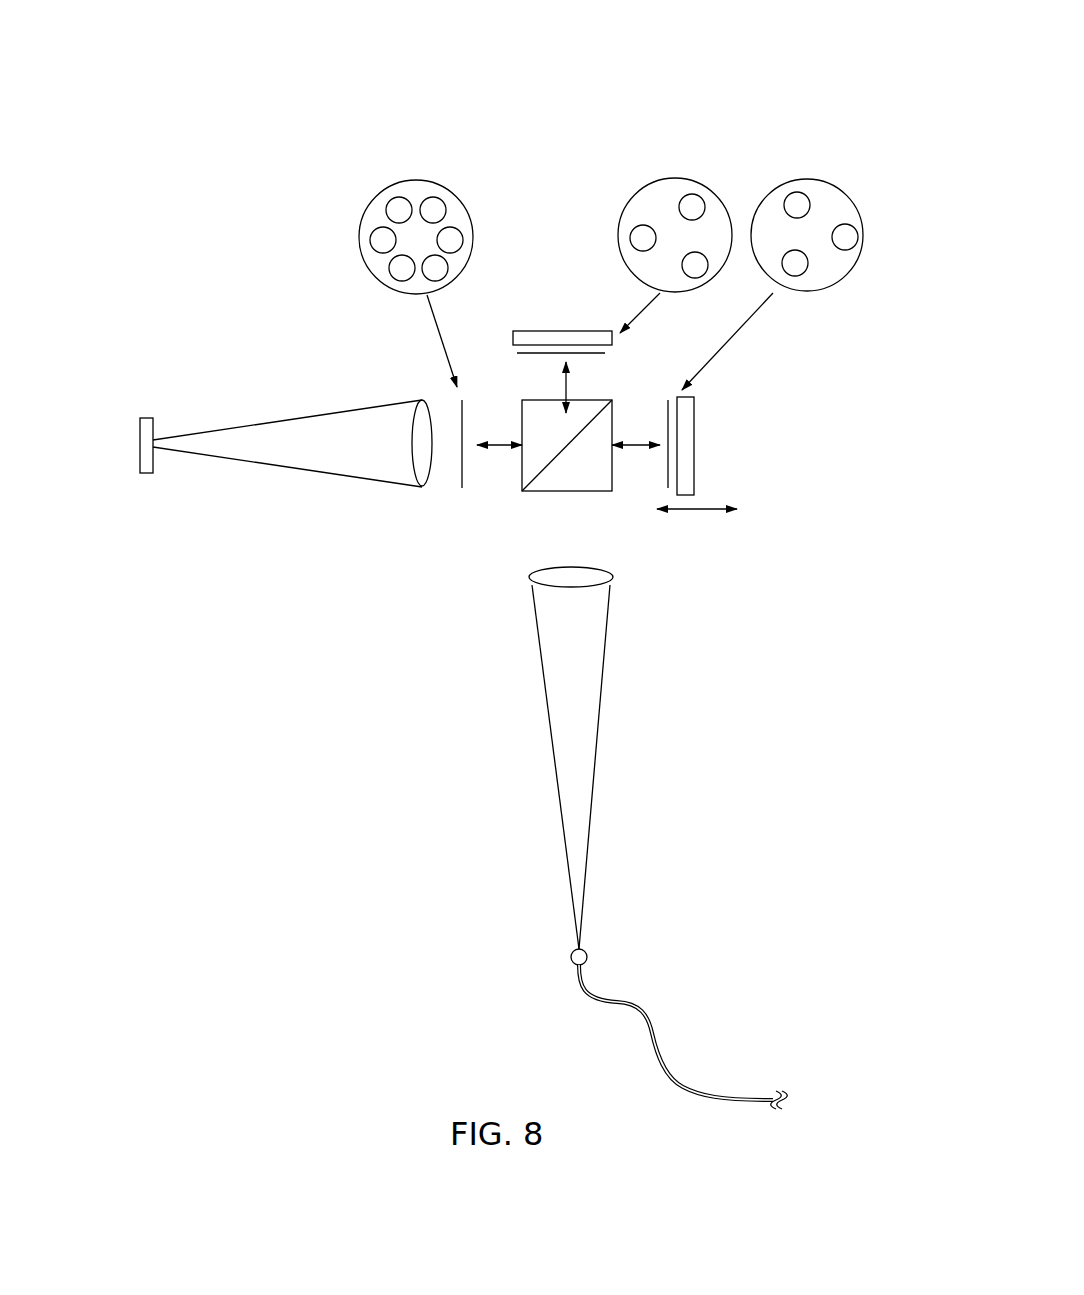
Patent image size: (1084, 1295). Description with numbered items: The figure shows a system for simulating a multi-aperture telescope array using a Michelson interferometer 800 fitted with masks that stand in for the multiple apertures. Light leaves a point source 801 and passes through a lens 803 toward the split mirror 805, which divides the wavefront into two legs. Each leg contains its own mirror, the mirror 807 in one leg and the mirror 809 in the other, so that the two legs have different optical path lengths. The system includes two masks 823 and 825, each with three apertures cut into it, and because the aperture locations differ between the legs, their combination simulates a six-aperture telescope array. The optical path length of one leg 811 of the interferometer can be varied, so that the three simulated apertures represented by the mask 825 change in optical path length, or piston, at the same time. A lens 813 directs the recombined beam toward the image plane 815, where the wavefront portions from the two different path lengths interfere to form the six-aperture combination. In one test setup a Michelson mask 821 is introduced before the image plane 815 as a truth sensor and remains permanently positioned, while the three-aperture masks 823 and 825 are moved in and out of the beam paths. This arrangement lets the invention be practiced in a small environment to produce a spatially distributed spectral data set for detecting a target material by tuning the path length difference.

The Michelson interferometer 800 is at (613, 75).
The point source 801 is at (587, 952).
The lens 803 is at (530, 575).
The split mirror 805 is at (522, 477).
The mirror 807 is at (532, 337).
The mirror 809 is at (694, 443).
The leg 811 is at (693, 510).
The lens 813 is at (423, 480).
The image plane 815 is at (140, 433).
The Michelson mask 821 is at (410, 183).
The mask 823 is at (658, 187).
The mask 825 is at (830, 188).